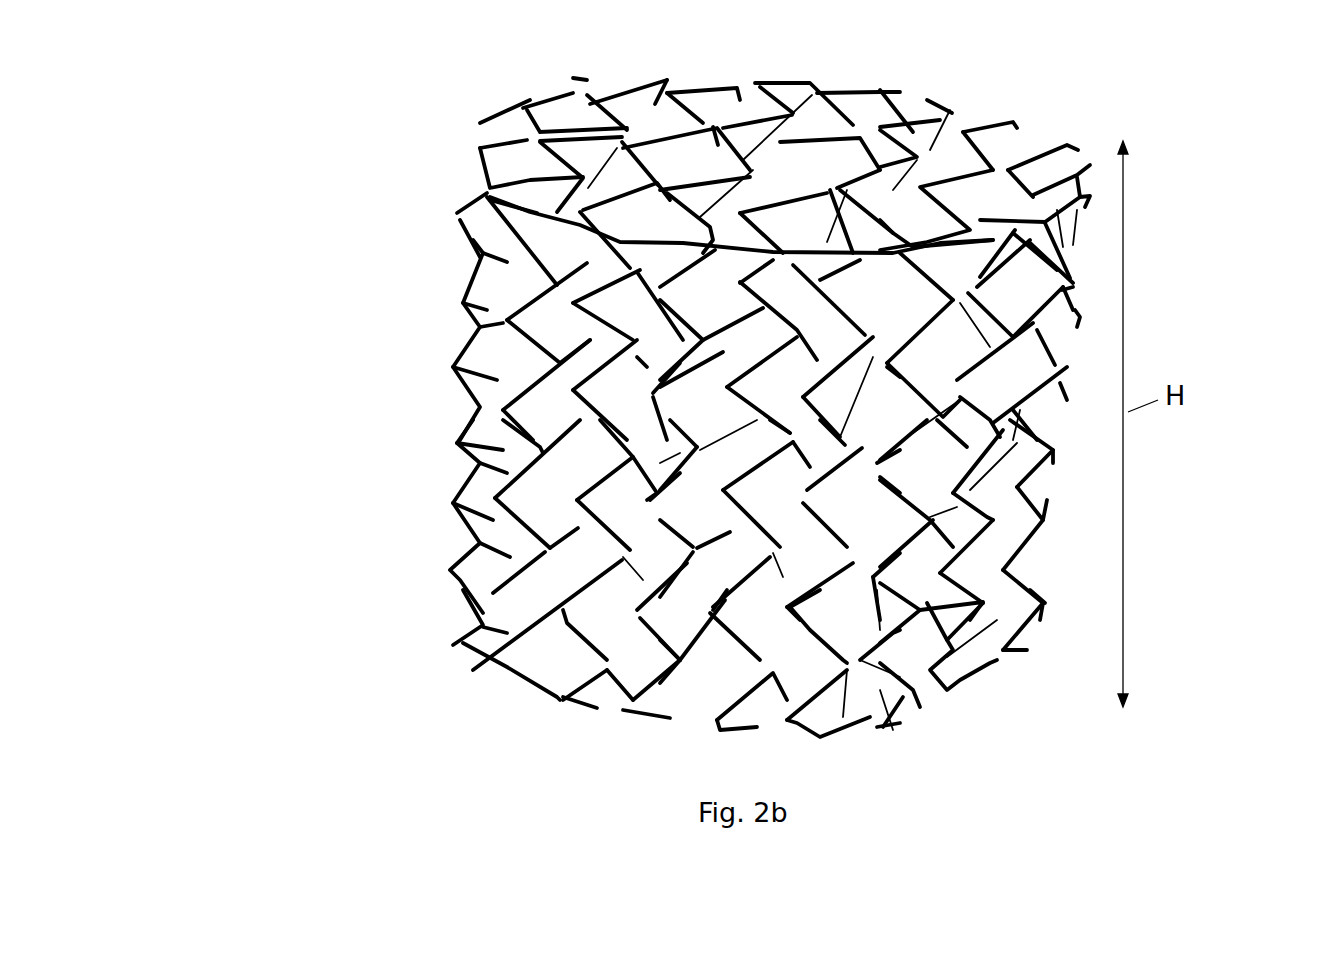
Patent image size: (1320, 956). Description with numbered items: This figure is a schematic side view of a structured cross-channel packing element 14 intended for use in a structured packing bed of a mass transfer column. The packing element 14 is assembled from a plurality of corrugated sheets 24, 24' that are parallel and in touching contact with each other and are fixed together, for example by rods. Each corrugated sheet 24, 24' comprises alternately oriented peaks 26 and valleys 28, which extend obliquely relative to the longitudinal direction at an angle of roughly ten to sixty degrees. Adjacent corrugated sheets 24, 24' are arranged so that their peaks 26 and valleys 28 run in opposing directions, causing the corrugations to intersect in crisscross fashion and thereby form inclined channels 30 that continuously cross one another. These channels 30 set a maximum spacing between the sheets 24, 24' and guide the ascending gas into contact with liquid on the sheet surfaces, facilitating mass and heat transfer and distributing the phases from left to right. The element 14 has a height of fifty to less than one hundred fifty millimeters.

The structured cross-channel packing element 14 is at (428, 431).
The corrugated sheet 24 is at (879, 442).
The corrugated sheet 24' is at (840, 179).
The peak 26 is at (588, 96).
The valley 28 is at (630, 128).
The inclined channel 30 is at (952, 155).